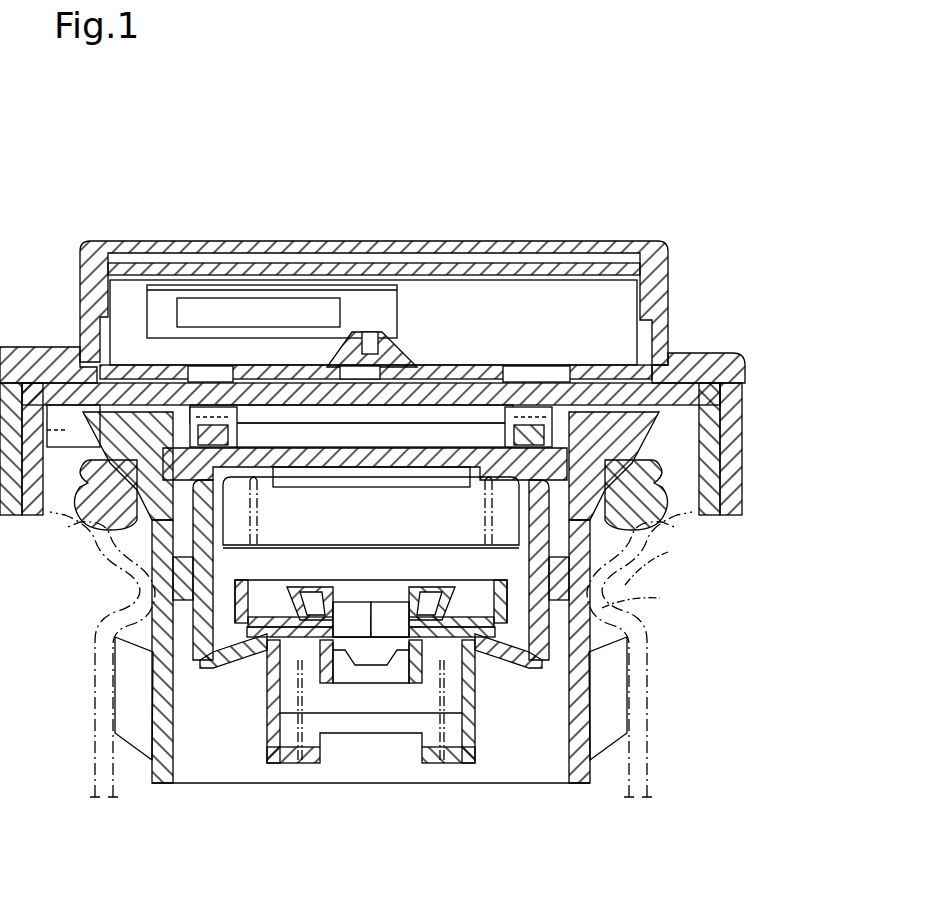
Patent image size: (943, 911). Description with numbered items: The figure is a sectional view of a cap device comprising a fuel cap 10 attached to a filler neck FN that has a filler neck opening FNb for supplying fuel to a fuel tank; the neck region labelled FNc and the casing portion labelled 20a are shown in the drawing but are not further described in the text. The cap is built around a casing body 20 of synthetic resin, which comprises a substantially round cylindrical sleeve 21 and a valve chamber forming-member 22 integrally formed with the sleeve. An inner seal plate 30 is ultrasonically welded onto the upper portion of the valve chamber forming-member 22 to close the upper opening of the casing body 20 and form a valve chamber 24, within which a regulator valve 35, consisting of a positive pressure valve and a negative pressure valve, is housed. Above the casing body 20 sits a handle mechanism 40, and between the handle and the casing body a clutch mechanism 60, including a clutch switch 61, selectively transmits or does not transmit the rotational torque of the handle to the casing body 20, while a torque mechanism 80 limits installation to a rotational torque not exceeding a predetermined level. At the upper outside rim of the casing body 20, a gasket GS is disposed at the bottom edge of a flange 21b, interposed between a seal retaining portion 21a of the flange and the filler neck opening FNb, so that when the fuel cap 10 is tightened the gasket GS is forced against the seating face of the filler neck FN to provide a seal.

The fuel cap 10 is at (684, 186).
The casing body 20 is at (42, 578).
The casing body 20a is at (597, 708).
The cylindrical sleeve 21 is at (160, 588).
The seal retaining portion 21a is at (567, 437).
The flange 21b is at (720, 402).
The valve chamber forming-member 22 is at (203, 643).
The valve chamber 24 is at (520, 637).
The inner seal plate 30 is at (713, 355).
The regulator valve 35 is at (512, 609).
The handle mechanism 40 is at (541, 242).
The clutch mechanism 60 is at (224, 352).
The clutch switch 61 is at (268, 284).
The torque mechanism 80 is at (495, 416).
The gasket GS is at (643, 497).
The filler neck FN is at (648, 760).
The filler neck opening FNb is at (665, 563).
The filler neck groove FNc is at (660, 597).